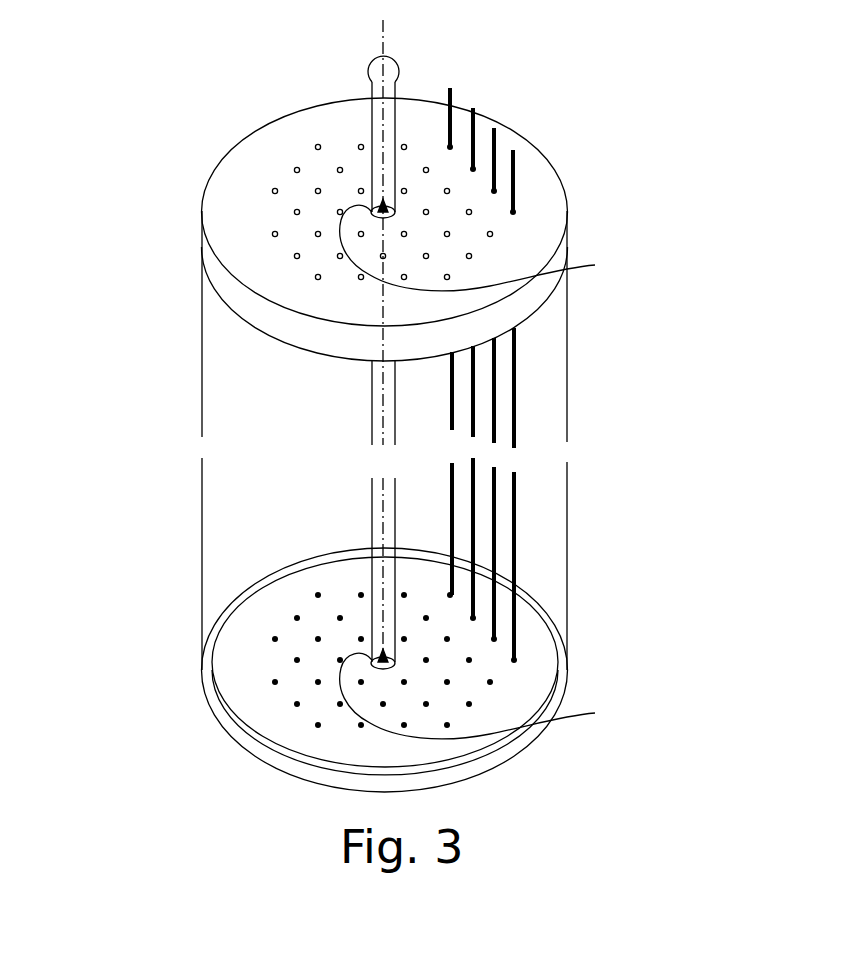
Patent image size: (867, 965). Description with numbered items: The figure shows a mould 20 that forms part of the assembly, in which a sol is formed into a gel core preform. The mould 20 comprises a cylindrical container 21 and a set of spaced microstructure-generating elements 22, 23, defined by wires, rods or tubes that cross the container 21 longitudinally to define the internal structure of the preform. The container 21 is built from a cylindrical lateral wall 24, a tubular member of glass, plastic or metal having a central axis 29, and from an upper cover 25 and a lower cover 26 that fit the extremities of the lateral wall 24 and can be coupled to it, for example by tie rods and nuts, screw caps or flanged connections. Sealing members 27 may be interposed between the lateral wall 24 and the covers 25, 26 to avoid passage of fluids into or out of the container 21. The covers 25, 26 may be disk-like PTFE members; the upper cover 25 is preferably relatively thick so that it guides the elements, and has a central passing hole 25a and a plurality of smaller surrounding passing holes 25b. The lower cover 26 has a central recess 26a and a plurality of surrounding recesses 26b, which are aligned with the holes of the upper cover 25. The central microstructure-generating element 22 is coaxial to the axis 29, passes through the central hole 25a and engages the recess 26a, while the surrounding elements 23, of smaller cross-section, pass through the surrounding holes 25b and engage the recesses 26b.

The mould 20 is at (590, 154).
The cylindrical container 21 is at (185, 316).
The central microstructure-generating element 22 is at (371, 110).
The surrounding microstructure-generating elements 23 is at (450, 90).
The cylindrical lateral wall 24 is at (208, 413).
The upper cover 25 is at (290, 140).
The central passing hole 25a is at (274, 234).
The surrounding passing holes 25b is at (595, 265).
The lower cover 26 is at (232, 640).
The central recess 26a is at (294, 704).
The surrounding recesses 26b is at (595, 713).
The sealing members 27 is at (562, 672).
The central axis 29 is at (385, 47).